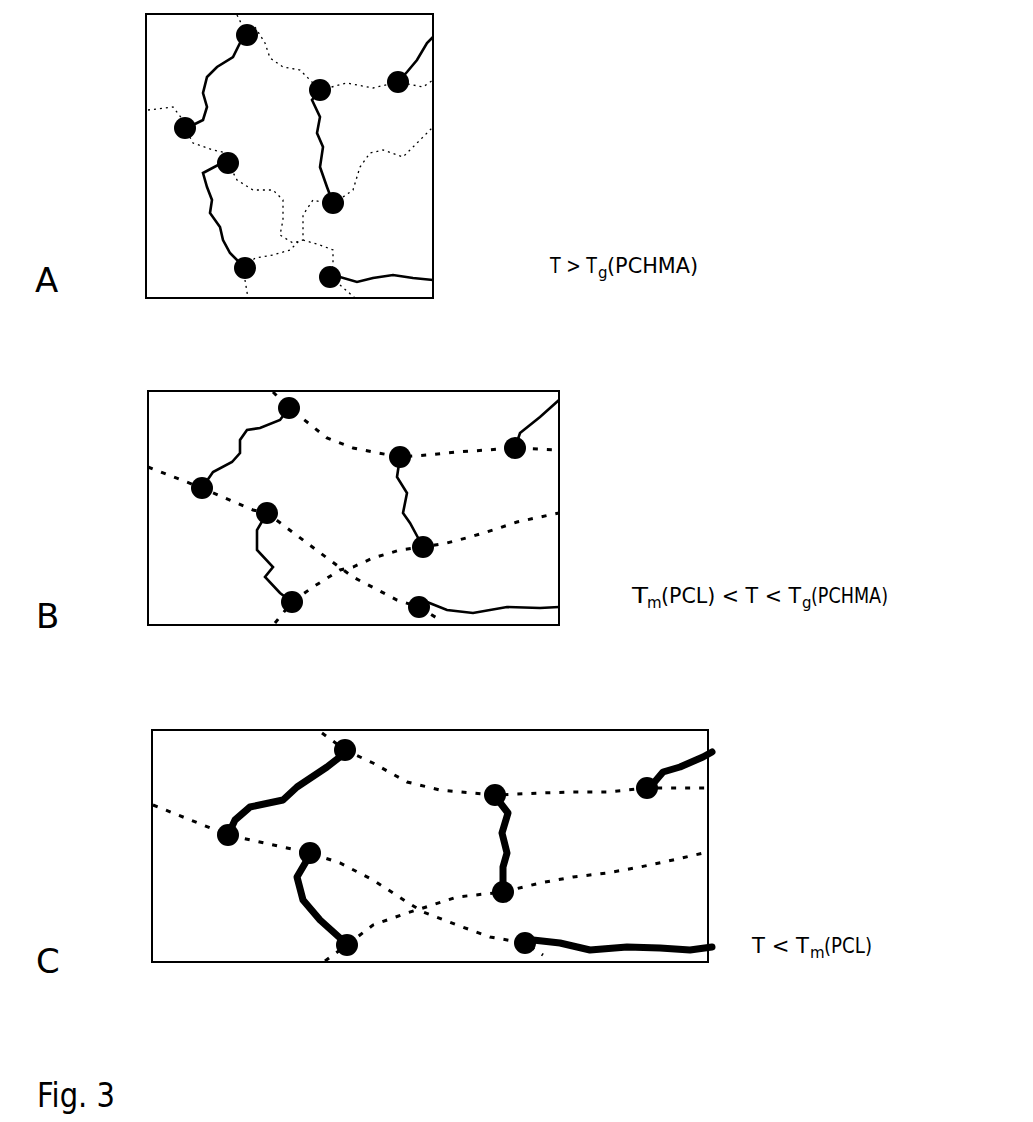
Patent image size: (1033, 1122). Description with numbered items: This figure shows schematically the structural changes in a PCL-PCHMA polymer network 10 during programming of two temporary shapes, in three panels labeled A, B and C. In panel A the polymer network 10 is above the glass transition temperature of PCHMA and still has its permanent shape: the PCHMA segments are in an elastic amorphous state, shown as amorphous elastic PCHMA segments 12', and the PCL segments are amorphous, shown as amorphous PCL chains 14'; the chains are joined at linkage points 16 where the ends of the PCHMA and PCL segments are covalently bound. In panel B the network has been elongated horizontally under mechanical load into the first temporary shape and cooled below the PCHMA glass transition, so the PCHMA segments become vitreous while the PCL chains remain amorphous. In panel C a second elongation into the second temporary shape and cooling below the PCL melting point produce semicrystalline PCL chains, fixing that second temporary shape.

The polymer network 10 is at (453, 57).
The amorphous elastic PCHMA segments 12' is at (290, 156).
The amorphous PCL chains 14' is at (372, 324).
The linkage points 16 is at (340, 207).